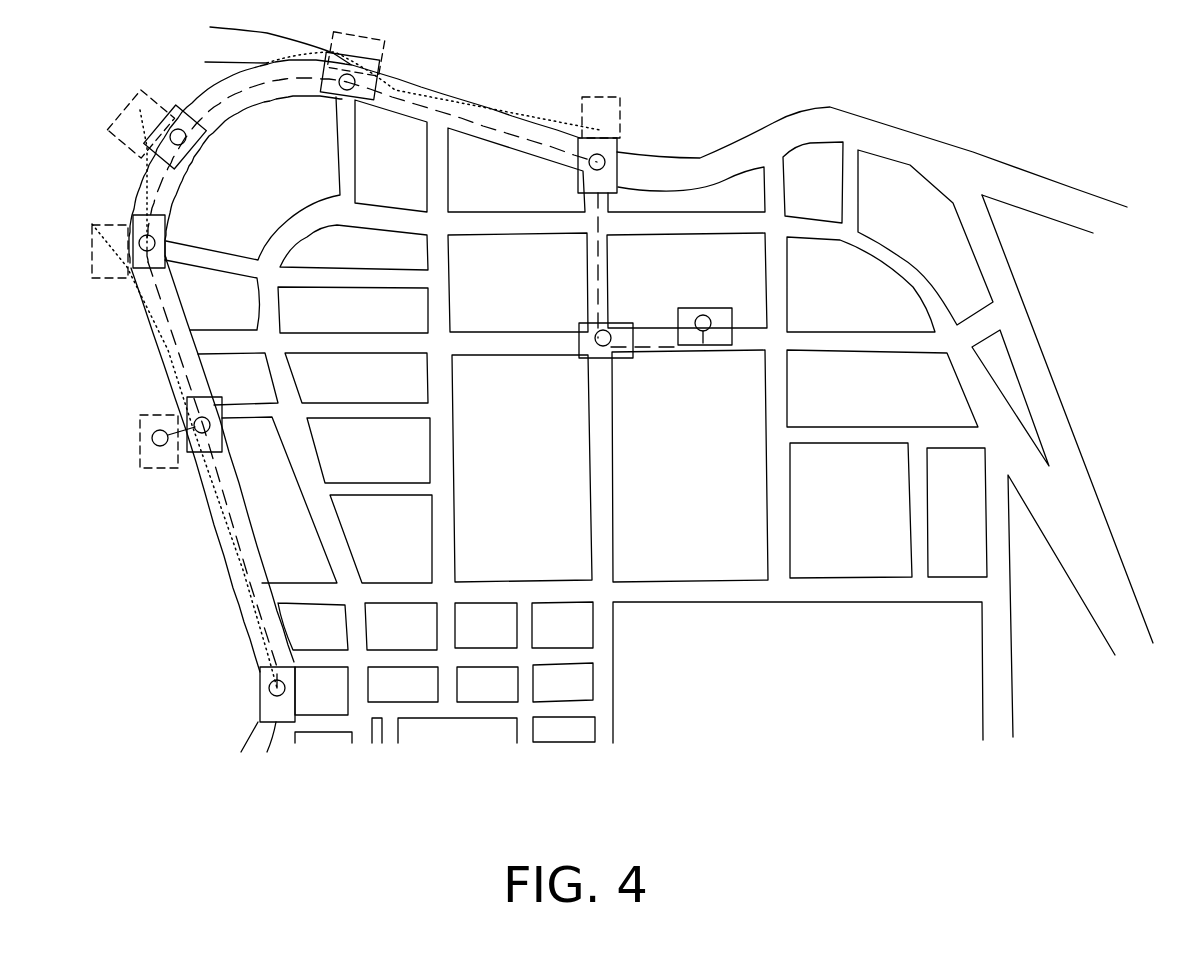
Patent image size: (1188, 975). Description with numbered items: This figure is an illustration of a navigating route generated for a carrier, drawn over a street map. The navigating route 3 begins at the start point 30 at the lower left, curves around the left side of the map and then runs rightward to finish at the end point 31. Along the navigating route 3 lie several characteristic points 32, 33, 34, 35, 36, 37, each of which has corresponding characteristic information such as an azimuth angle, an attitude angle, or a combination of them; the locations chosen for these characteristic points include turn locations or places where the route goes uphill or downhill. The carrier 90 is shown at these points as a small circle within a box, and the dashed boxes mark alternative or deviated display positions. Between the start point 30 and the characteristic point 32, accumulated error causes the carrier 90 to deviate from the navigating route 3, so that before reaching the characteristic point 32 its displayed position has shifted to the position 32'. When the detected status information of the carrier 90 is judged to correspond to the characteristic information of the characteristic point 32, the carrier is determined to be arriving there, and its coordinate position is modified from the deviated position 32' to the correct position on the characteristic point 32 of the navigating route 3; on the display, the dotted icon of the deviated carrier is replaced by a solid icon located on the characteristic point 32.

The navigating route 3 is at (265, 577).
The start point 30 is at (268, 690).
The end point 31 is at (708, 317).
The characteristic point 32 is at (237, 441).
The deviated position 32' is at (137, 445).
The characteristic point 33 is at (134, 218).
The characteristic point 34 is at (184, 143).
The characteristic point 35 is at (354, 76).
The characteristic point 36 is at (605, 160).
The characteristic point 37 is at (597, 334).
The carrier 90 is at (185, 160).